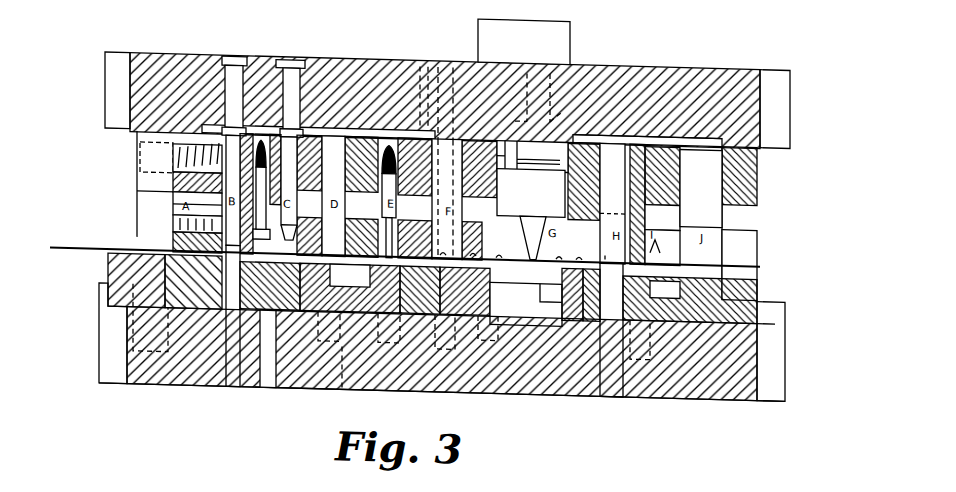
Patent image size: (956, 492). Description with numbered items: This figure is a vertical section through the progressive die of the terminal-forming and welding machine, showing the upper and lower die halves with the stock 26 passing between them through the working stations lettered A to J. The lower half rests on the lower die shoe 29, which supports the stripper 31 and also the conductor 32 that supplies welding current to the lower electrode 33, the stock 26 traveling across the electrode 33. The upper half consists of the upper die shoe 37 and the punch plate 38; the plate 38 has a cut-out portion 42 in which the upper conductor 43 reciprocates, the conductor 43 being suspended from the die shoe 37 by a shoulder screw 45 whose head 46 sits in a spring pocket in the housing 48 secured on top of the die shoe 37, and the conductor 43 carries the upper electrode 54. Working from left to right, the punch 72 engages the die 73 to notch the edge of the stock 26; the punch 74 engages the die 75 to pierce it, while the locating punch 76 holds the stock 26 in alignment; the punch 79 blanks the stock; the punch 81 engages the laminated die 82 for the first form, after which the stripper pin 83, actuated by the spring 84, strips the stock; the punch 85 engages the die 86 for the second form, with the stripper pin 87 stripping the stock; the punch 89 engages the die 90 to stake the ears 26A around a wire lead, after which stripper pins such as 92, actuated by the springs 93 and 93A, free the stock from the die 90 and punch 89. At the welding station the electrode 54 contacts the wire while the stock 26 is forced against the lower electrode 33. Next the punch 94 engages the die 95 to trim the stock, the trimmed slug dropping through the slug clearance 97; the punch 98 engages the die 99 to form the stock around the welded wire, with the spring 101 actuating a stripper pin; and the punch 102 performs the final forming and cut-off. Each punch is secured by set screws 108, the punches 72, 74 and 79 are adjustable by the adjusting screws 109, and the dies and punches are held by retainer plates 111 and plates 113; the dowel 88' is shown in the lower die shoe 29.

The stock 26 is at (70, 251).
The ears 26A is at (446, 247).
The lower die shoe 29 is at (110, 331).
The stripper 31 is at (752, 228).
The conductor 32 is at (526, 304).
The lower electrode 33 is at (551, 295).
The upper die shoe 37 is at (787, 62).
The punch plate 38 is at (140, 147).
The cut-out portion 42 is at (505, 131).
The upper conductor 43 is at (545, 187).
The shoulder screw 45 is at (553, 66).
The head 46 is at (550, 101).
The housing 48 is at (560, 24).
The electrode 54 is at (531, 222).
The punch 72 is at (173, 190).
The die 73 is at (180, 229).
The punch 74 is at (234, 190).
The die 75 is at (249, 383).
The locating punch 76 is at (263, 184).
The punch 79 is at (289, 188).
The punch 81 is at (333, 196).
The die 82 is at (300, 287).
The stripper pin 83 is at (339, 328).
The spring 84 is at (313, 385).
The punch 85 is at (390, 201).
The die 86 is at (356, 288).
The stripper pin 87 is at (396, 328).
The dowel 88' is at (353, 379).
The punch 89 is at (456, 132).
The die 90 is at (445, 290).
The stripper pin 92 is at (478, 329).
The spring 93 is at (441, 383).
The spring 93A is at (415, 64).
The punch 94 is at (612, 204).
The die 95 is at (641, 272).
The slug clearance 97 is at (615, 382).
The punch 98 is at (641, 198).
The die 99 is at (650, 248).
The spring 101 is at (645, 382).
The punch 102 is at (712, 166).
The set screws 108 is at (175, 161).
The adjusting screws 109 is at (234, 48).
The retainer plates 111 is at (663, 127).
The plates 113 is at (351, 118).